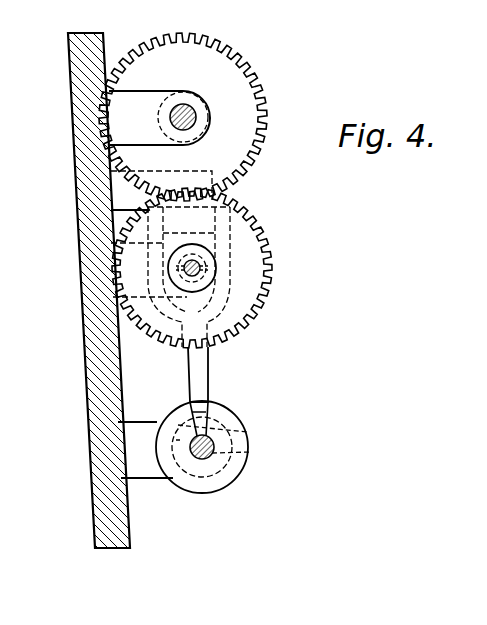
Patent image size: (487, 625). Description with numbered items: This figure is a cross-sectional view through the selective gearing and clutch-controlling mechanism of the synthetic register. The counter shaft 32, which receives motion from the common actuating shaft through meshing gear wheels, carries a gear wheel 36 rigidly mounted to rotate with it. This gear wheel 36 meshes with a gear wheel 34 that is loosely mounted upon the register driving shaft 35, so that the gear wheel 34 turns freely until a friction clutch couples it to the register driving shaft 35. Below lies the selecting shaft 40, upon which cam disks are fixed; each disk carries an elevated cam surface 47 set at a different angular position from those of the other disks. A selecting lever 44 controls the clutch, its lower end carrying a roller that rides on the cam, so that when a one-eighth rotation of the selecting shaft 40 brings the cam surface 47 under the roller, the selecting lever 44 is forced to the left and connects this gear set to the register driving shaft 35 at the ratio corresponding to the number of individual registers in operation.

The counter shaft 32 is at (196, 110).
The gear wheel 34 is at (269, 282).
The register driving shaft 35 is at (200, 276).
The gear wheel 36 is at (247, 80).
The selecting shaft 40 is at (205, 452).
The selecting lever 44 is at (207, 383).
The cam surface 47 is at (212, 430).